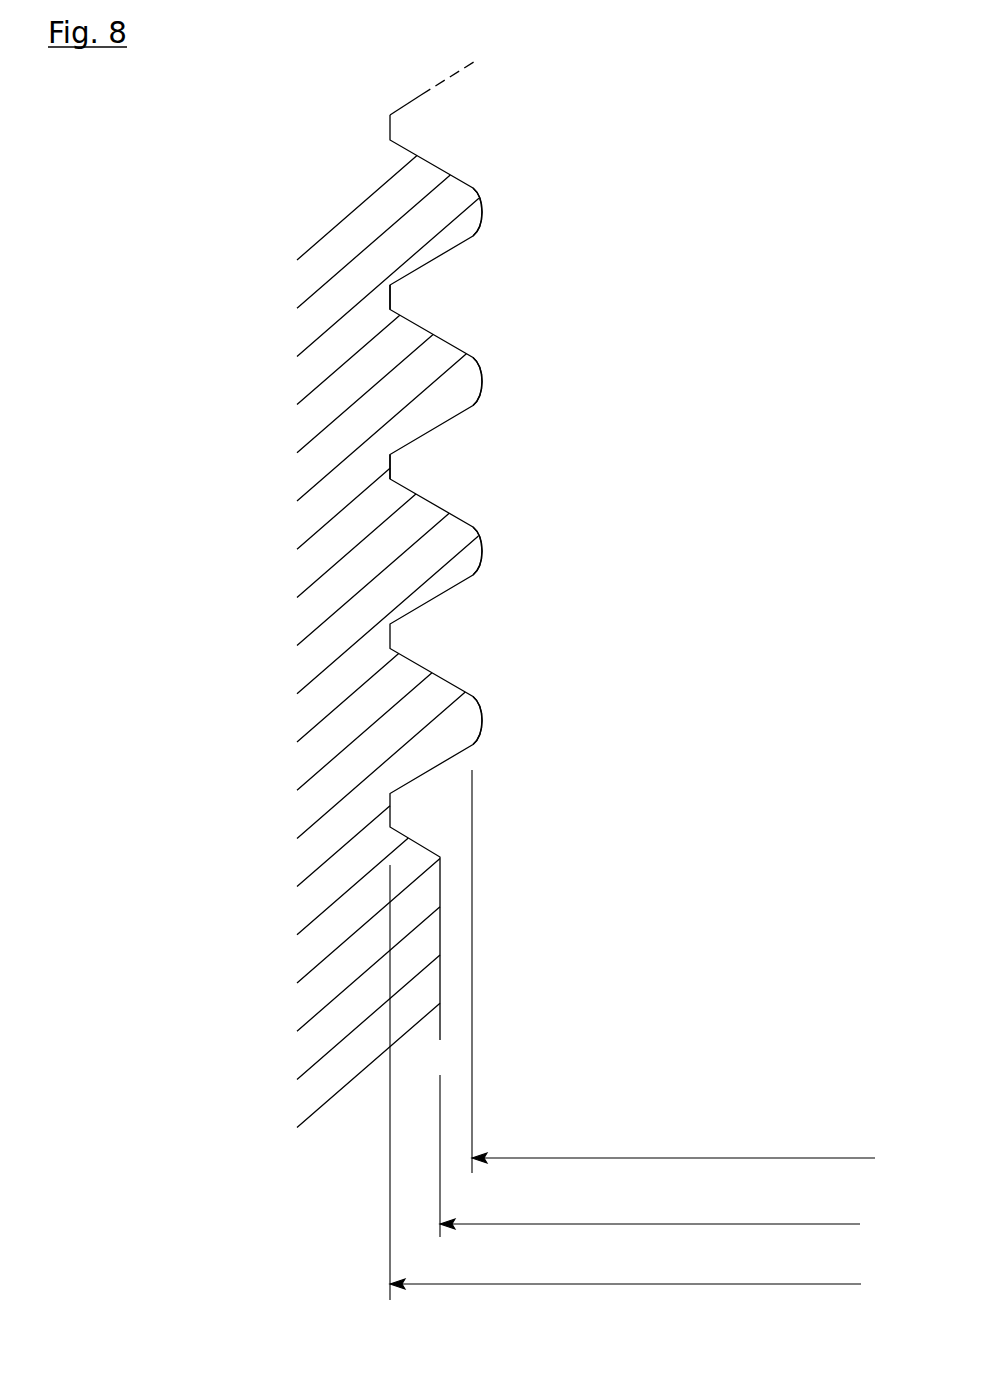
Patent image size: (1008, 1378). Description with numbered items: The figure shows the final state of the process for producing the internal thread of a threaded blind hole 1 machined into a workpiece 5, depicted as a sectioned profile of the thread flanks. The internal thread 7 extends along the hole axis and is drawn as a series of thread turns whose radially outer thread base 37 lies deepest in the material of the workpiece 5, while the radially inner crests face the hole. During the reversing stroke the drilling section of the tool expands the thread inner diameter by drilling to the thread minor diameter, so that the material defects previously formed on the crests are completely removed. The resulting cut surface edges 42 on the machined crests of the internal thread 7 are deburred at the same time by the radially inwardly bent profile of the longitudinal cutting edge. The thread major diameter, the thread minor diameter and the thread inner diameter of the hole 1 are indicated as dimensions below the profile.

The threaded blind hole 1 is at (687, 398).
The workpiece 5 is at (243, 368).
The internal thread 7 is at (390, 464).
The thread base 37 is at (390, 297).
The cut surface edges 42 is at (482, 212).